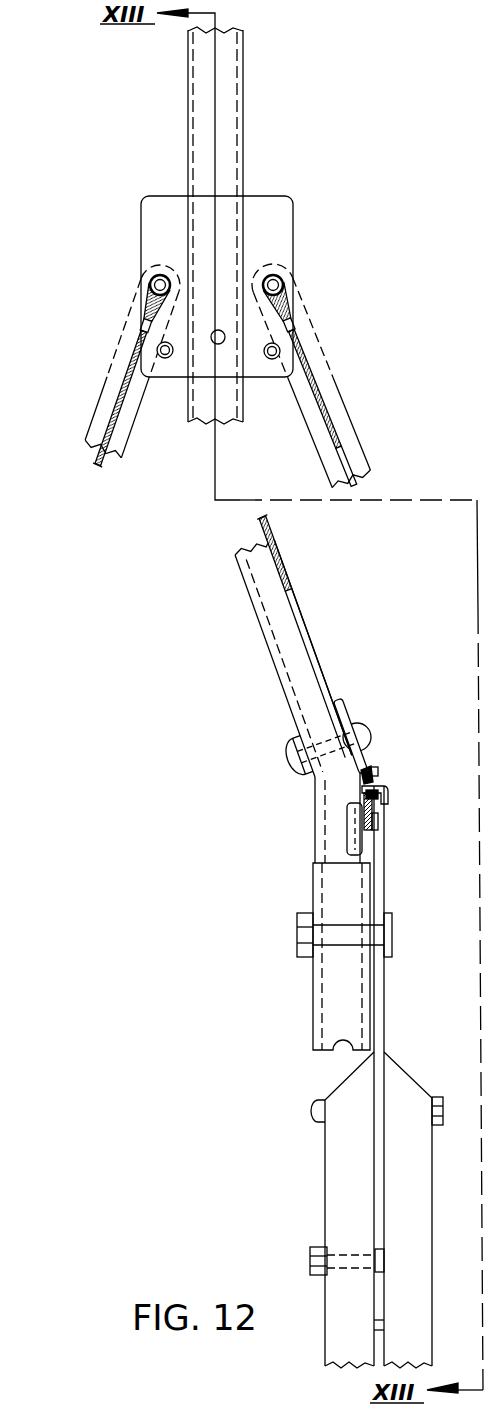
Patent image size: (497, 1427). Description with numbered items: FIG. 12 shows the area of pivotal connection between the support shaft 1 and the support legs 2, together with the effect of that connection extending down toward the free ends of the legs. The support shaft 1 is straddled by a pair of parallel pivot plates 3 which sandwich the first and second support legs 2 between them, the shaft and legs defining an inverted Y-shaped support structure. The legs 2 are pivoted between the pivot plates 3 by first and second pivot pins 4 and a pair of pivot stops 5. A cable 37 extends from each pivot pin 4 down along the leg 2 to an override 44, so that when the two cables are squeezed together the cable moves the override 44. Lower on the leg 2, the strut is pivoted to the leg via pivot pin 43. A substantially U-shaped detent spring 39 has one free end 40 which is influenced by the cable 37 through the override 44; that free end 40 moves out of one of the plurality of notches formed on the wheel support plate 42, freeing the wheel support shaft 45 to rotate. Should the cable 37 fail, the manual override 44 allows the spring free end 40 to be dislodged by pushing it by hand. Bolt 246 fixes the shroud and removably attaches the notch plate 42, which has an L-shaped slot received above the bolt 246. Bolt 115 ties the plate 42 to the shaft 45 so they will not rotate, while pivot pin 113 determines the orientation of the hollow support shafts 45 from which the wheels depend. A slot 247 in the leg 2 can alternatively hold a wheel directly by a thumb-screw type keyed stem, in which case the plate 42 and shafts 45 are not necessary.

The support shaft 1 is at (200, 80).
The support legs 2 is at (112, 372).
The pivot plates 3 is at (258, 196).
The pivot pins 4 is at (152, 278).
The pivot stops 5 is at (163, 360).
The cable 37 is at (93, 459).
The detent spring 39 is at (369, 769).
The free end of detent spring 40 is at (378, 773).
The wheel support plate 42 is at (380, 996).
The pivot pin 43 is at (362, 741).
The override 44 is at (347, 838).
The wheel support shaft 45 is at (336, 1170).
The pivot pin 113 is at (442, 1099).
The bolt 115 is at (310, 1258).
The bolt 246 is at (297, 935).
The slot 247 is at (306, 1017).